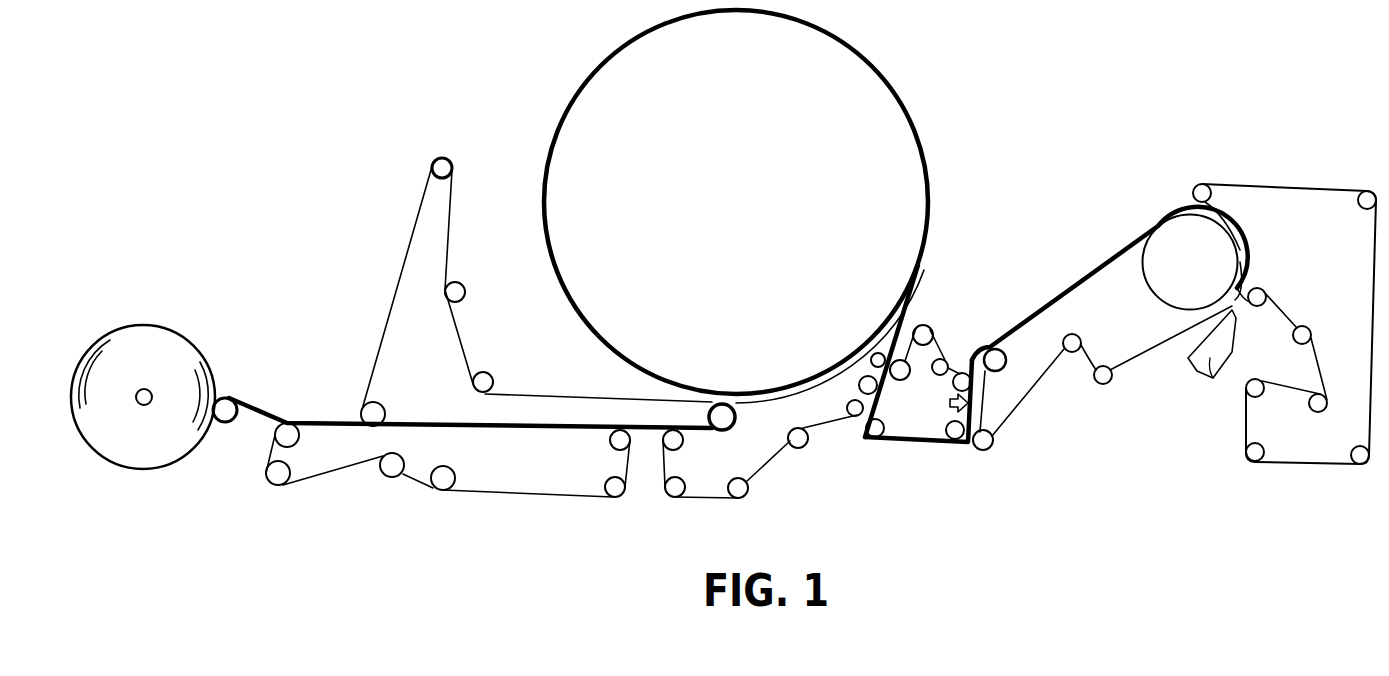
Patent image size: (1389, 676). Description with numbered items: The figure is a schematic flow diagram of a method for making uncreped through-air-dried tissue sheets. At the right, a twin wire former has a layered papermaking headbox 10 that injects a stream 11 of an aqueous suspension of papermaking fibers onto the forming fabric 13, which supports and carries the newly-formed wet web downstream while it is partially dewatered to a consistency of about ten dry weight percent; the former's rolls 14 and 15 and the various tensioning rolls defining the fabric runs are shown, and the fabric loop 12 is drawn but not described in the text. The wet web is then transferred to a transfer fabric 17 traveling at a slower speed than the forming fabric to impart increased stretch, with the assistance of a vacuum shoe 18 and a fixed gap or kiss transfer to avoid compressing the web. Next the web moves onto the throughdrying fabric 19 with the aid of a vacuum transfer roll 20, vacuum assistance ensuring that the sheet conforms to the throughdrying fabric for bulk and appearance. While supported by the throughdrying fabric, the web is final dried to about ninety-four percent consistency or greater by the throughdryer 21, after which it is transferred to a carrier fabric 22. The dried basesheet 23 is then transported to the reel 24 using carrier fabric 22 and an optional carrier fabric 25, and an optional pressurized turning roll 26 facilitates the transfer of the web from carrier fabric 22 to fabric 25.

The layered papermaking headbox 10 is at (1222, 372).
The stream 11 is at (1240, 303).
The web handling section 12 is at (1275, 185).
The forming fabric 13 is at (1142, 362).
The roll 14 is at (1174, 276).
The belt 15 is at (1162, 222).
The transfer fabric 17 is at (955, 368).
The vacuum shoe 18 is at (950, 403).
The throughdrying fabric 19 is at (832, 423).
The vacuum transfer roll 20 is at (858, 388).
The throughdryer 21 is at (719, 234).
The carrier fabric 22 is at (395, 288).
The dried basesheet 23 is at (648, 433).
The reel 24 is at (127, 447).
The optional carrier fabric 25 is at (337, 470).
The pressurized turning roll 26 is at (383, 401).